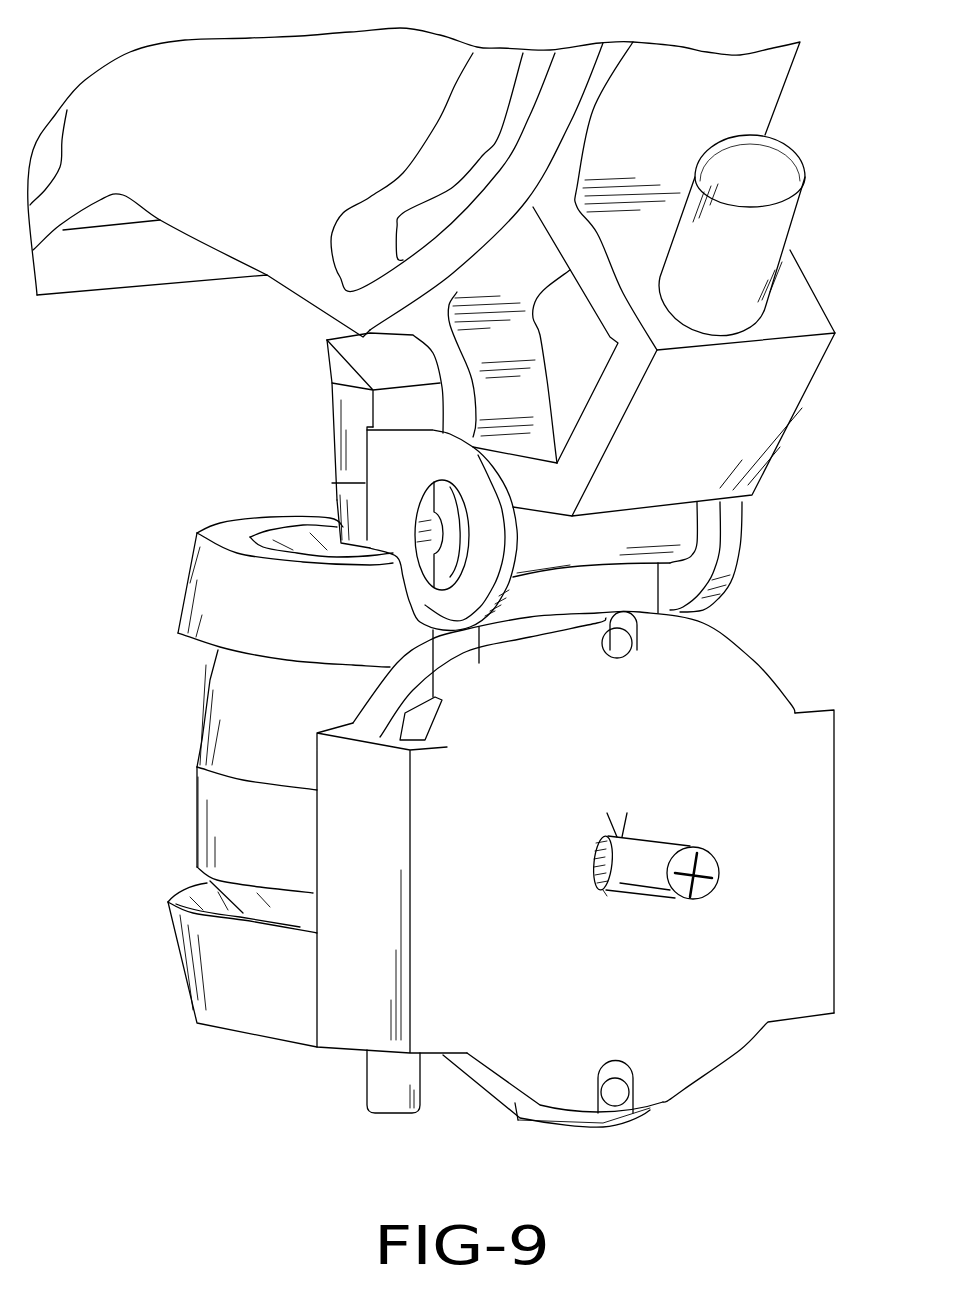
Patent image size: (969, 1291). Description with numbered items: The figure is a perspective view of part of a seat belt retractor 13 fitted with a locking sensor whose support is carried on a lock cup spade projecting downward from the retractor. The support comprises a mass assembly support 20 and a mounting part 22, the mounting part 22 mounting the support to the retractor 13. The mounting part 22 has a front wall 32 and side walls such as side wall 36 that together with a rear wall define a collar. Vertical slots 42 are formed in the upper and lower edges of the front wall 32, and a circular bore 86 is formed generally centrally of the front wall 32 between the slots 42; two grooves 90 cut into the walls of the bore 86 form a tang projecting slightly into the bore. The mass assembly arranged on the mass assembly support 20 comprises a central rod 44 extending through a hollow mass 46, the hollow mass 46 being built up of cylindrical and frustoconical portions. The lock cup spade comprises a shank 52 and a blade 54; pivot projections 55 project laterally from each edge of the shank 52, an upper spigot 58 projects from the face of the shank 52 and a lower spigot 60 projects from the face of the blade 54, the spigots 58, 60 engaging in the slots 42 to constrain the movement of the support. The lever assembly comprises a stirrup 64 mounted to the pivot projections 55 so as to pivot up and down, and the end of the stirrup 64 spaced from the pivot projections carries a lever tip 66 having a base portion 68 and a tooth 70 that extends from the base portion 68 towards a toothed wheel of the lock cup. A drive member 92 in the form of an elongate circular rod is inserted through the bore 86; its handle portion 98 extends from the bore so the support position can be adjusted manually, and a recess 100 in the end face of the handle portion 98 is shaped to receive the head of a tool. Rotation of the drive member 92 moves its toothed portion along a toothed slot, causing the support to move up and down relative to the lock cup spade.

The seat belt retractor 13 is at (803, 83).
The tooth 70 is at (333, 358).
The lever tip 66 is at (330, 443).
The base portion 68 is at (330, 507).
The pivot projections 55 is at (658, 530).
The stirrup 64 is at (738, 558).
The shank 52 is at (637, 598).
The upper spigot 58 is at (610, 657).
The vertical slots 42 is at (633, 655).
The front wall 32 is at (813, 742).
The mounting part 22 is at (813, 972).
The grooves 90 is at (613, 837).
The handle portion 98 is at (645, 850).
The circular bore 86 is at (593, 870).
The drive member 92 is at (603, 897).
The recess 100 is at (697, 890).
The hollow mass 46 is at (203, 720).
The mass assembly support 20 is at (263, 1020).
The side wall 36 is at (353, 1023).
The central rod 44 is at (387, 1103).
The blade 54 is at (507, 1105).
The lower spigot 60 is at (607, 1093).